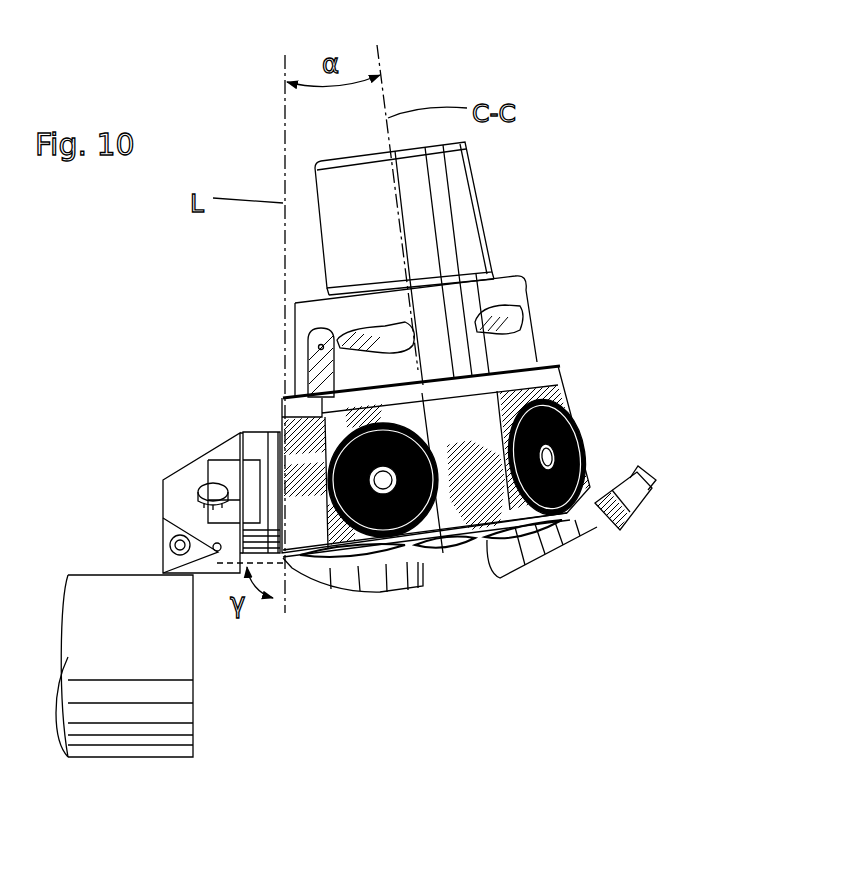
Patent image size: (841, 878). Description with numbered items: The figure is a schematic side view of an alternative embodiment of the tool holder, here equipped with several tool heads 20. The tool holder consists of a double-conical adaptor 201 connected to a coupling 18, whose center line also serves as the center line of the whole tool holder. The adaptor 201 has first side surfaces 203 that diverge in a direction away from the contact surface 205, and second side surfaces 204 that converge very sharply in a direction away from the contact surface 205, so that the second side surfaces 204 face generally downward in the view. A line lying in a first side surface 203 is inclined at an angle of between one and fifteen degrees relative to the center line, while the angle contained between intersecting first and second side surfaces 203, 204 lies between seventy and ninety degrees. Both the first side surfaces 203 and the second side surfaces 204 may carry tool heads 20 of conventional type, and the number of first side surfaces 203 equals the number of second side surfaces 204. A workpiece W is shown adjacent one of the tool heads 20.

The coupling 18 is at (502, 196).
The tool heads 20 is at (168, 463).
The adaptor 201 is at (573, 373).
The first side surfaces 203 is at (252, 445).
The second side surfaces 204 is at (343, 552).
The contact surface 205 is at (297, 398).
The workpiece W is at (205, 697).